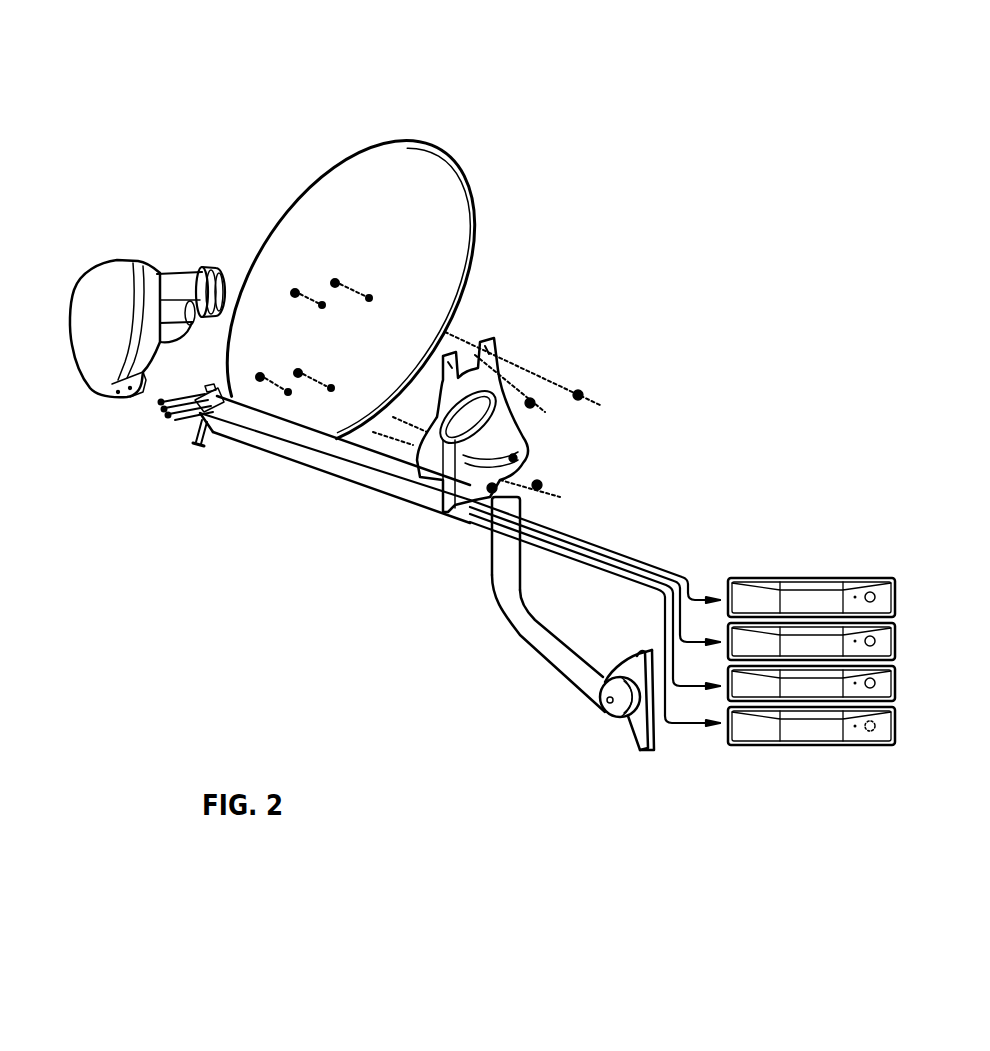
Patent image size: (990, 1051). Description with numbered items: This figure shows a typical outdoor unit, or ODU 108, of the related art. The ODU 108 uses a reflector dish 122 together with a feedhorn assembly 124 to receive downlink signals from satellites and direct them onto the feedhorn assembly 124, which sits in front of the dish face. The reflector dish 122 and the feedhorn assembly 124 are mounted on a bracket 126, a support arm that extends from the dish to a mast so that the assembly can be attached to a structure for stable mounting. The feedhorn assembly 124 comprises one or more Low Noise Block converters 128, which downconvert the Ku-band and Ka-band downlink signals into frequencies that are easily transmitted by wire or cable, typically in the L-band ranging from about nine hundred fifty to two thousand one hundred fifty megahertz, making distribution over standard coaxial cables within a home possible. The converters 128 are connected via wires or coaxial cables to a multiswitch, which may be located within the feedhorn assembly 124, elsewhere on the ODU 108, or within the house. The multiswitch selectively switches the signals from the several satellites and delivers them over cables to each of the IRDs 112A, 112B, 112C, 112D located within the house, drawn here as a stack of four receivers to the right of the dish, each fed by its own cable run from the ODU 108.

The ODU 108 is at (458, 70).
The reflector dish 122 is at (313, 177).
The feedhorn assembly 124 is at (118, 257).
The Low Noise Block converter 128 is at (180, 267).
The bracket 126 is at (370, 498).
The IRD 112A is at (843, 573).
The IRD 112B is at (897, 638).
The IRD 112C is at (898, 683).
The IRD 112D is at (902, 723).